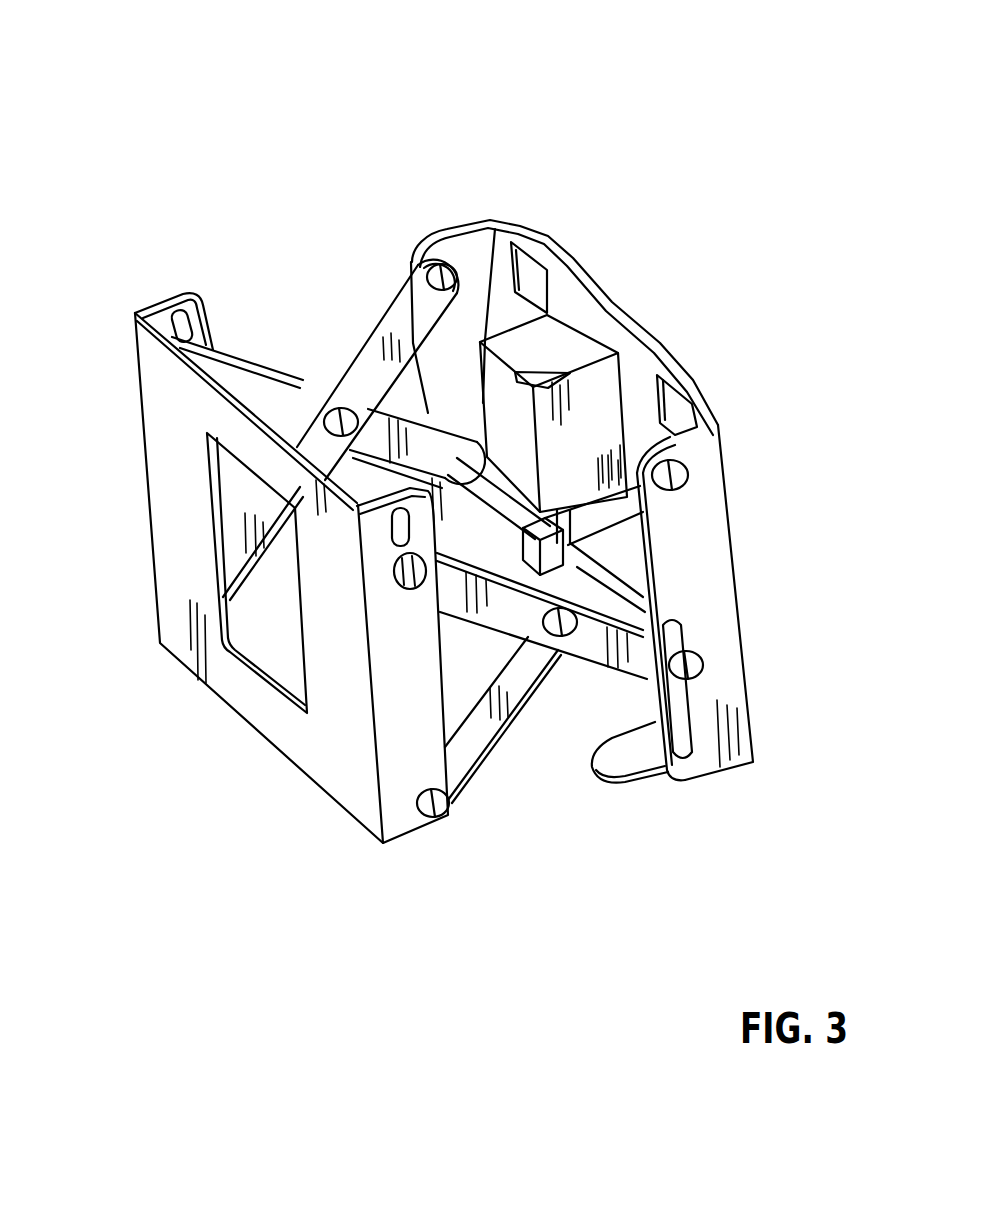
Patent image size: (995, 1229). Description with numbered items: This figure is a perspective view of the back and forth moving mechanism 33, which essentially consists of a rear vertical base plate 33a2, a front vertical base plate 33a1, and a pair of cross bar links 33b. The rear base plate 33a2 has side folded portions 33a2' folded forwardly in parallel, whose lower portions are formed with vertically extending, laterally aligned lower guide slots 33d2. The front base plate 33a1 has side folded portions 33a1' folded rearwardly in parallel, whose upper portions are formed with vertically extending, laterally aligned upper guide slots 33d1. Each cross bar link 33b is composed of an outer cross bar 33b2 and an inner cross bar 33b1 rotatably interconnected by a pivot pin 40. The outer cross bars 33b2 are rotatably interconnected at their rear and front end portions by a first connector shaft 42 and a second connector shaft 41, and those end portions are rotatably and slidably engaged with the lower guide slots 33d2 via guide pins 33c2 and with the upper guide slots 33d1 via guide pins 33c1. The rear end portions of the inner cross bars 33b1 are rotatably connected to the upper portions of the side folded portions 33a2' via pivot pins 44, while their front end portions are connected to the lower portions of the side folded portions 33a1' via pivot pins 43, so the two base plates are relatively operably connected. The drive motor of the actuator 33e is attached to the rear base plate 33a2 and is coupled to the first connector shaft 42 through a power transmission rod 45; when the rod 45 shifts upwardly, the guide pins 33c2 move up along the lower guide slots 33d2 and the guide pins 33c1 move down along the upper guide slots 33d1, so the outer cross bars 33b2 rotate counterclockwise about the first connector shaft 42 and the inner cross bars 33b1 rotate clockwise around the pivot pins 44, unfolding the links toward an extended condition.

The back and forth moving mechanism 33 is at (182, 100).
The front vertical base plate 33a1 is at (244, 559).
The side folded portions of the front base plate 33a1' is at (248, 530).
The rear vertical base plate 33a2 is at (596, 501).
The side folded portions of the rear base plate 33a2' is at (640, 467).
The cross bar links 33b is at (375, 252).
The inner cross bar 33b1 is at (370, 368).
The outer cross bar 33b2 is at (245, 376).
The guide pins 33c1 is at (405, 592).
The guide pins 33c2 is at (700, 678).
The upper guide slots 33d1 is at (397, 523).
The lower guide slots 33d2 is at (680, 732).
The actuator 33e is at (551, 328).
The pivot pin 40 is at (323, 417).
The second connector shaft 41 is at (400, 572).
The first connector shaft 42 is at (612, 600).
The pivot pins 43 is at (430, 822).
The pivot pins 44 is at (418, 268).
The power transmission rod 45 is at (600, 553).